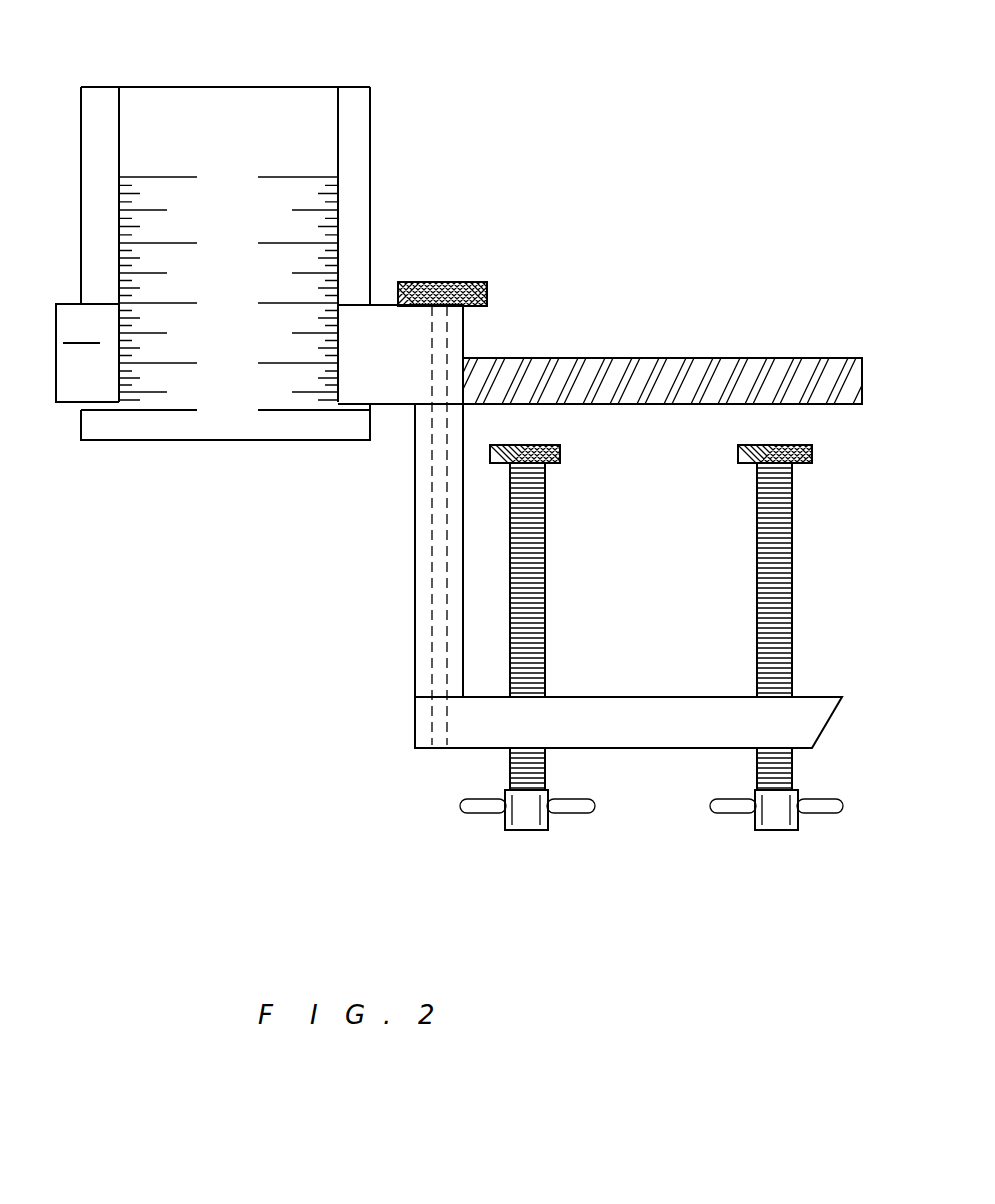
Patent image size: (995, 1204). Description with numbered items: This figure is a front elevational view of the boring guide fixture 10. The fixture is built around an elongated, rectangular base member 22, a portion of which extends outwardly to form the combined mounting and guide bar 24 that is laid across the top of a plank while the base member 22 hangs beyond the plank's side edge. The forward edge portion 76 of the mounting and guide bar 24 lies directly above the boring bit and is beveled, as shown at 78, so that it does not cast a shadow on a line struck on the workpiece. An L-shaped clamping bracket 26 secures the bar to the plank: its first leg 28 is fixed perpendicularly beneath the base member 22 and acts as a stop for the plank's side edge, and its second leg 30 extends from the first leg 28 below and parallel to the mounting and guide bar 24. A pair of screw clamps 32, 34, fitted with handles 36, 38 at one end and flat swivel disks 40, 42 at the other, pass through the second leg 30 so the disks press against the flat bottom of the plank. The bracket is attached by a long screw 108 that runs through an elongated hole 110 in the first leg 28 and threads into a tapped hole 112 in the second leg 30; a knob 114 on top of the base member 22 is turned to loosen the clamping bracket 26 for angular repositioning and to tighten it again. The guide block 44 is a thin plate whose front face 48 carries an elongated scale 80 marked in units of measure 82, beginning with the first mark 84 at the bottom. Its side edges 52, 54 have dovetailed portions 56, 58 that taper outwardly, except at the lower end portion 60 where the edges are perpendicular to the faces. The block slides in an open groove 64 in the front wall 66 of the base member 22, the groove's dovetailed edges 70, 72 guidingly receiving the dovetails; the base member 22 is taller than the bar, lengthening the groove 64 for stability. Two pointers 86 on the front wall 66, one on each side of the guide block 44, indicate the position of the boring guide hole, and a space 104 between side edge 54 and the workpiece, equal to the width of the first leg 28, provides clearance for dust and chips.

The boring guide fixture 10 is at (455, 228).
The base member 22 is at (58, 313).
The mounting and guide bar 24 is at (633, 357).
The clamping bracket 26 is at (415, 593).
The first leg 28 is at (427, 537).
The second leg 30 is at (807, 700).
The screw clamp 32 is at (547, 590).
The screw clamp 34 is at (757, 578).
The handle 36 is at (480, 813).
The handle 38 is at (737, 805).
The flat swivel disk 40 is at (560, 450).
The flat swivel disk 42 is at (738, 452).
The guide block 44 is at (293, 103).
The front face 48 is at (165, 113).
The side edge 52 is at (80, 430).
The side edge 54 is at (372, 425).
The dovetailed portion 56 is at (92, 133).
The dovetailed portion 58 is at (367, 170).
The lower end portion 60 is at (135, 430).
The open groove 64 is at (338, 335).
The front wall 66 is at (87, 353).
The dovetailed edge 70 is at (102, 302).
The dovetailed edge 72 is at (352, 303).
The forward edge portion 76 is at (637, 405).
The bevel 78 is at (765, 377).
The scale 80 is at (280, 187).
The units of measure 82 is at (119, 202).
The first mark 84 is at (278, 412).
The pointer 86 is at (343, 397).
The space 104 is at (398, 435).
The screw 108 is at (440, 632).
The elongated hole 110 is at (432, 665).
The tapped hole 112 is at (447, 727).
The knob 114 is at (463, 282).